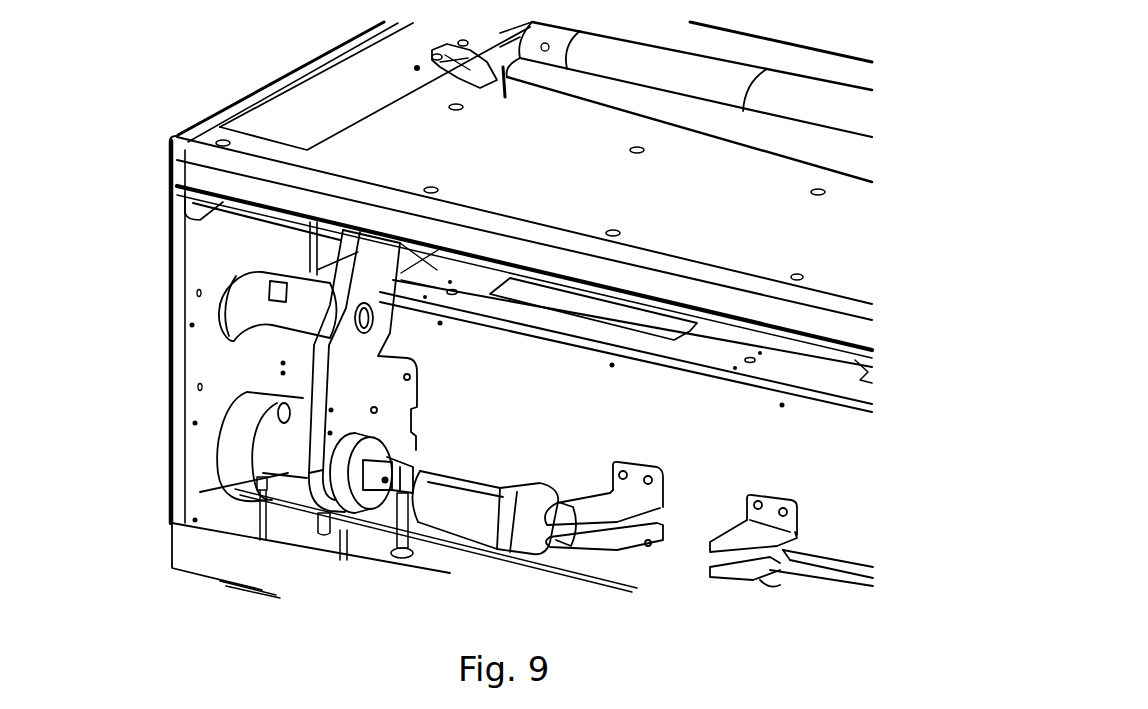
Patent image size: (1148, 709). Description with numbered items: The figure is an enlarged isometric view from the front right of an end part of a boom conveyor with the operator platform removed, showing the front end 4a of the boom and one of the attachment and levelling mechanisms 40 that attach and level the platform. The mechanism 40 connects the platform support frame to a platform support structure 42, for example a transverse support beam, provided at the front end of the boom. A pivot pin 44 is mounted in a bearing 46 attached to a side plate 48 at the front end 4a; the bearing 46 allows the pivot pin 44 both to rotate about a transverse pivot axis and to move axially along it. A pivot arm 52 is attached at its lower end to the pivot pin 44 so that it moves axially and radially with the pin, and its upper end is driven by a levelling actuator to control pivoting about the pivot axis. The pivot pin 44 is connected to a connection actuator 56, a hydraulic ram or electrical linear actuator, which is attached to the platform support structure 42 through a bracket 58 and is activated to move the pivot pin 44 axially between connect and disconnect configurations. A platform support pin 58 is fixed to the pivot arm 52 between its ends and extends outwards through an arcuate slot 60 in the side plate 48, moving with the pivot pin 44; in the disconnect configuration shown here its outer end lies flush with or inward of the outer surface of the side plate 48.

The front end of the boom 4a is at (205, 80).
The attachment and levelling mechanism 40 is at (299, 546).
The platform support structure 42 is at (695, 540).
The pivot pin 44 is at (287, 470).
The bearing 46 is at (230, 447).
The side plate 48 is at (203, 370).
The pivot arm 52 is at (373, 340).
The connection actuator 56 is at (463, 528).
The bracket 58 is at (603, 502).
The arcuate slot 60 is at (238, 288).